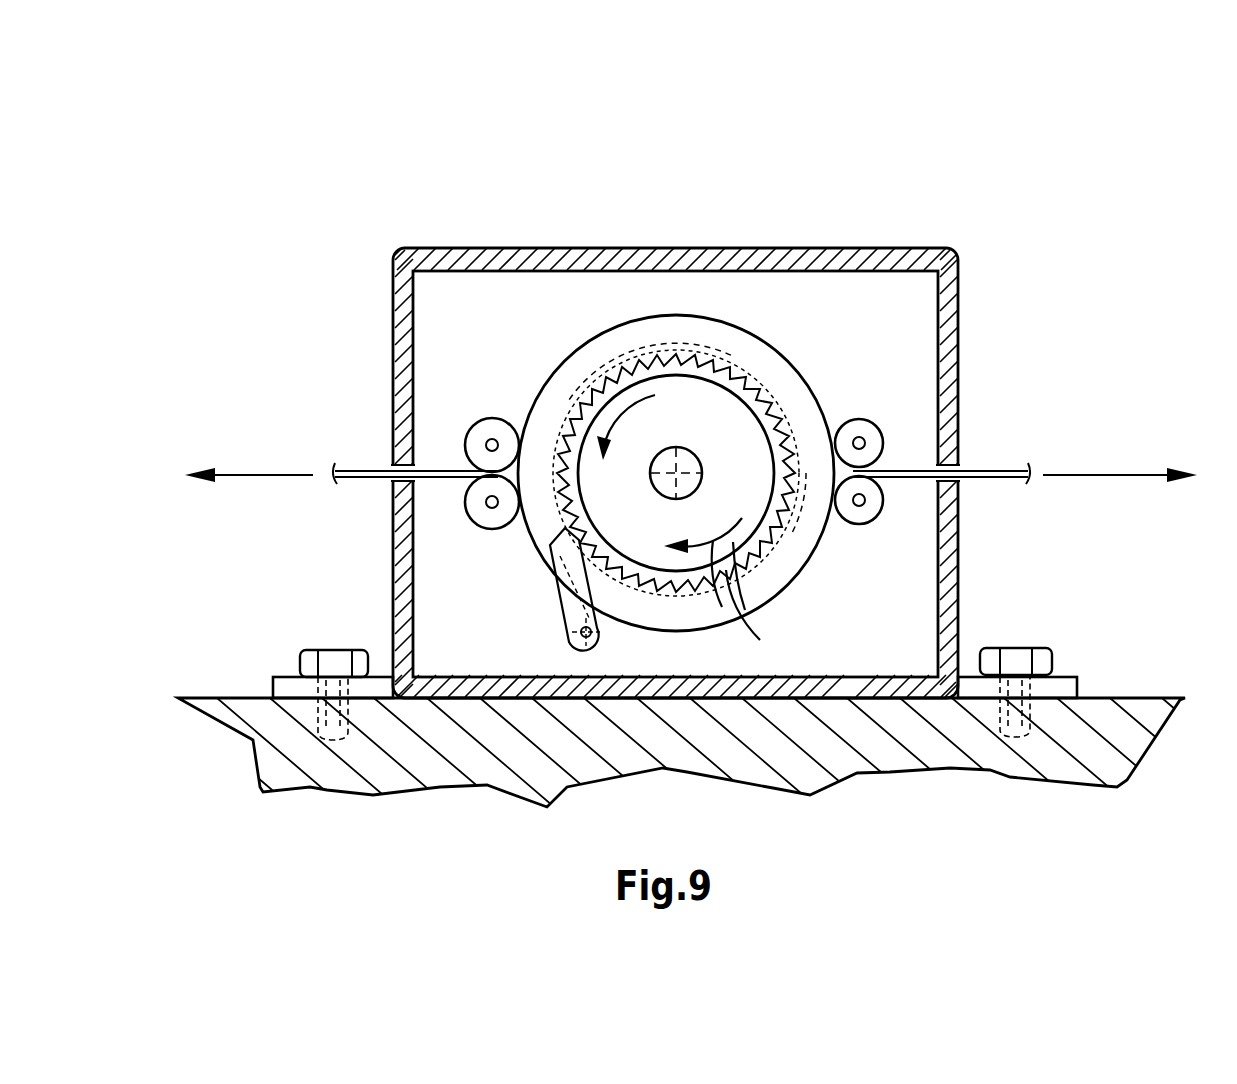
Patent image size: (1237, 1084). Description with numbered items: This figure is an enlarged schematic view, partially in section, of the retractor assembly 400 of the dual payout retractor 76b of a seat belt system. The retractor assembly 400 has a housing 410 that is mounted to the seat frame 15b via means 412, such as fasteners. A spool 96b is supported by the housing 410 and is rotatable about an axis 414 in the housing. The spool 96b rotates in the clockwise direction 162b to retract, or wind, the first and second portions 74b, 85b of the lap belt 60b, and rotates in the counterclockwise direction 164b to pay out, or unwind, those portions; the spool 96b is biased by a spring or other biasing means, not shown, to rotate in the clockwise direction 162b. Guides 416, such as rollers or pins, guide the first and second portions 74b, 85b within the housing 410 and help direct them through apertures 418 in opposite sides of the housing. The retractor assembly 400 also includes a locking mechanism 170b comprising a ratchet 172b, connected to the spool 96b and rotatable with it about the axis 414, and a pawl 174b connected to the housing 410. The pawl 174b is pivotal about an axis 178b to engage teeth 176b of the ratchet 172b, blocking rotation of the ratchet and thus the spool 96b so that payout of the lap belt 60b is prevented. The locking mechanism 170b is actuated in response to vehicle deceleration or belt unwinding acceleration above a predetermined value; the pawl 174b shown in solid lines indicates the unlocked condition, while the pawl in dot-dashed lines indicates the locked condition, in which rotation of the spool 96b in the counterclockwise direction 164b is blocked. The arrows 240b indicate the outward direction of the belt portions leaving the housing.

The seat frame 15b is at (766, 735).
The lap belt 60b is at (378, 468).
The first portion of the lap belt 74b is at (1007, 464).
The dual payout retractor 76b is at (528, 170).
The second portion of the lap belt 85b is at (355, 472).
The spool 96b is at (748, 352).
The clockwise direction 162b is at (730, 540).
The counterclockwise direction 164b is at (617, 418).
The locking mechanism 170b is at (512, 648).
The ratchet 172b is at (652, 580).
The pawl 174b is at (560, 548).
The teeth 176b is at (730, 587).
The axis 178b is at (598, 642).
The direction of strip movement 240b is at (272, 475).
The retractor assembly 400 is at (634, 160).
The housing 410 is at (713, 250).
The means 412 is at (335, 657).
The axis 414 is at (678, 472).
The guides 416 is at (472, 450).
The apertures 418 is at (400, 477).